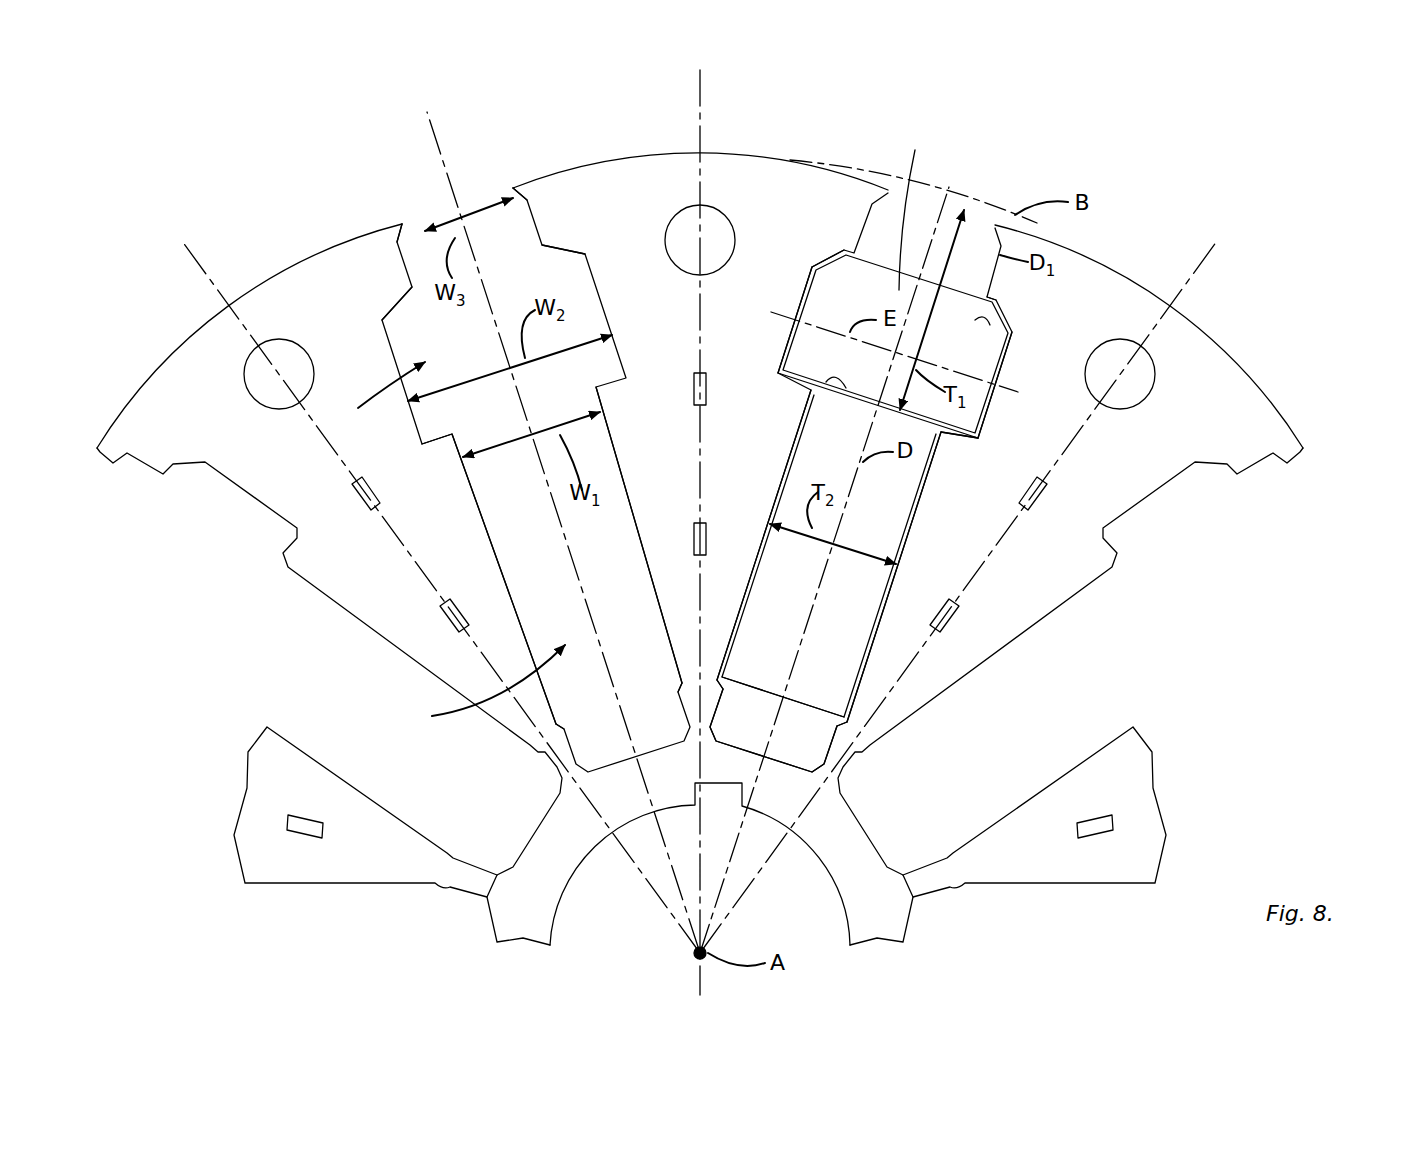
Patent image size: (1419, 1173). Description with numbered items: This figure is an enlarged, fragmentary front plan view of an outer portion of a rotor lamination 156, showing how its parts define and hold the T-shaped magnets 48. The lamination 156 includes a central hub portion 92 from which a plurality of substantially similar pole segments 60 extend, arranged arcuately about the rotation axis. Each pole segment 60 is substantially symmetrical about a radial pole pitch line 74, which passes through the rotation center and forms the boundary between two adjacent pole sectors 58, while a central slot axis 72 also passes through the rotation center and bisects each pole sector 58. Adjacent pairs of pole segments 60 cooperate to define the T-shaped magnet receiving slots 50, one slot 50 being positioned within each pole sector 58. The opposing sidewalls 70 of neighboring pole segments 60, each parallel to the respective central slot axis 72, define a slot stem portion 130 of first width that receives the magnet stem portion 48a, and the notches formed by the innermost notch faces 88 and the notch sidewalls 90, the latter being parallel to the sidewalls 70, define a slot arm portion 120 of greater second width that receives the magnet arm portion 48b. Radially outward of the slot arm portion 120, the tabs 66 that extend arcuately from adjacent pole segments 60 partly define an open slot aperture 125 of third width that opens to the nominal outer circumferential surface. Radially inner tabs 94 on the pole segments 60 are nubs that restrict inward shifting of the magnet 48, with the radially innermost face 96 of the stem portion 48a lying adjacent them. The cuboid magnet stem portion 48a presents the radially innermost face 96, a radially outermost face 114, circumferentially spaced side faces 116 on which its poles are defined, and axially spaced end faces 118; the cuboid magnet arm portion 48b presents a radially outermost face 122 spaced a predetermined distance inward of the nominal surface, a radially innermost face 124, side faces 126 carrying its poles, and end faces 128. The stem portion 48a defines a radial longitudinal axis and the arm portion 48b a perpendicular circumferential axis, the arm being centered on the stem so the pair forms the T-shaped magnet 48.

The magnet 48 is at (1022, 432).
The magnet stem portion 48a is at (880, 527).
The magnet arm portion 48b is at (915, 204).
The magnet receiving slot 50 is at (480, 190).
The pole sector 58 is at (1140, 305).
The pole segment 60 is at (292, 282).
The tab 66 is at (405, 222).
The sidewall 70 is at (628, 495).
The central slot axis 72 is at (188, 250).
The radial pole pitch line 74 is at (443, 118).
The innermost notch face 88 is at (452, 440).
The notch sidewall 90 is at (597, 280).
The central hub portion 92 is at (873, 835).
The inner tab 94 is at (672, 695).
The radially innermost face 96 is at (807, 712).
The radially outermost face 114 is at (835, 382).
The side face 116 is at (762, 555).
The end face 118 is at (840, 668).
The slot arm portion 120 is at (376, 393).
The radially outermost face 122 is at (885, 257).
The radially innermost face 124 is at (972, 448).
The slot aperture 125 is at (427, 230).
The side face 126 is at (790, 333).
The end face 128 is at (982, 323).
The slot stem portion 130 is at (474, 686).
The lamination 156 is at (1192, 106).